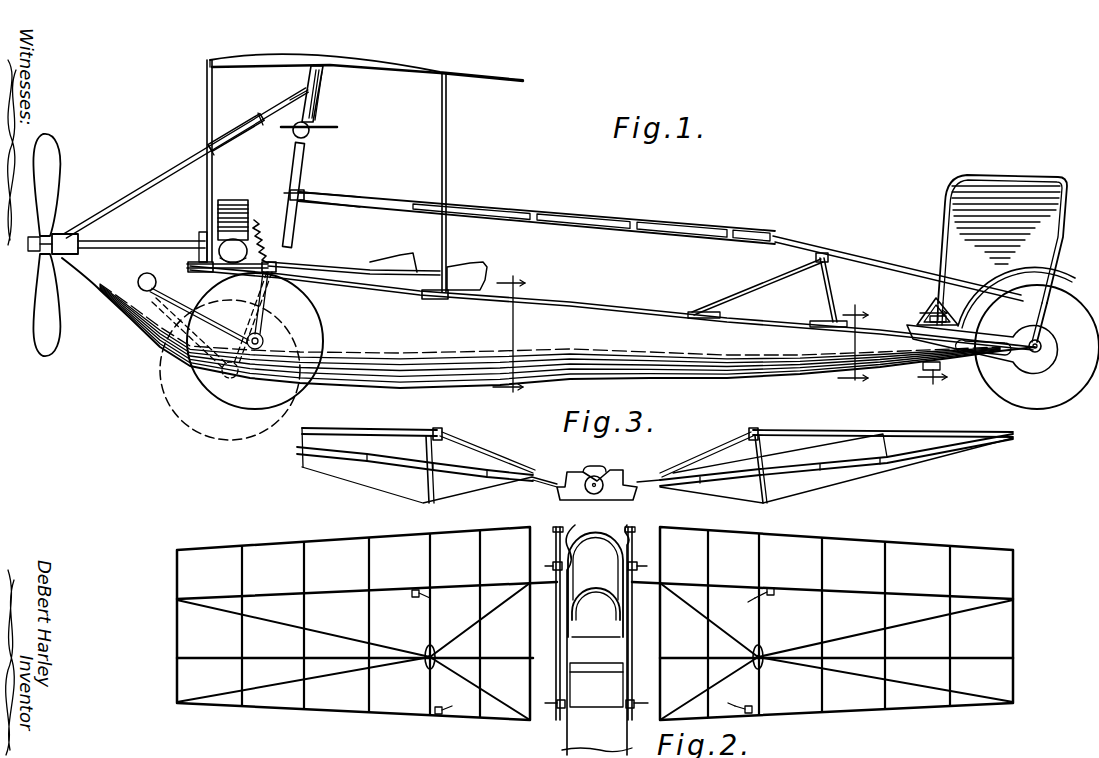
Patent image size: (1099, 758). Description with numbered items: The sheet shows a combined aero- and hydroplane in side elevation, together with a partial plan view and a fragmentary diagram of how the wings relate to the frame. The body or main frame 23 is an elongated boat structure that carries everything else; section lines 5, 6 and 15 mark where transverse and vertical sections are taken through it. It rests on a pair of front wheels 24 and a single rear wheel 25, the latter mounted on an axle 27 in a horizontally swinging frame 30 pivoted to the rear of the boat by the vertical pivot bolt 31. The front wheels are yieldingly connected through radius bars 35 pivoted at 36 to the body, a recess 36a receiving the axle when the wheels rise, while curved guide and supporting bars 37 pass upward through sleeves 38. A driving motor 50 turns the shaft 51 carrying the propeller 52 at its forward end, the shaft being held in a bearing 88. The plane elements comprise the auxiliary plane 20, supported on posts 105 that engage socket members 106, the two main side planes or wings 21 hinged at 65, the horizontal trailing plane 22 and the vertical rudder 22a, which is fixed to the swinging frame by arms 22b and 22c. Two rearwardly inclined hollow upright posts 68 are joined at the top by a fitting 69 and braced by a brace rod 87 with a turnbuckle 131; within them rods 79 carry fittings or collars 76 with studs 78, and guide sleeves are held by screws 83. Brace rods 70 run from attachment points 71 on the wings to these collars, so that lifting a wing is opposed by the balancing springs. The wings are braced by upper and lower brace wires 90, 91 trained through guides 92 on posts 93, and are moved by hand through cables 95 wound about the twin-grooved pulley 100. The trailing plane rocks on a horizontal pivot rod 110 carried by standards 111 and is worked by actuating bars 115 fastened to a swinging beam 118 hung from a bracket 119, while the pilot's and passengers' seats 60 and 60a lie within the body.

In FIG. 1, the section line 5— 5 is at (509, 333).
In FIG. 1, the section line 6— 6 is at (853, 344).
In FIG. 1, the section line 15— 15 is at (922, 342).
In FIG. 1, the auxiliary plane 20 is at (363, 57).
In FIG. 2, the main side planes or wings 21 is at (595, 623).
In FIG. 1, the trailing plane 22 is at (860, 256).
In FIG. 1, the vertical plane or rudder 22a is at (1002, 239).
In FIG. 1, the arms 22b is at (907, 317).
In FIG. 1, the arms 22c is at (1050, 302).
In FIG. 1, the body or main frame 23 is at (611, 301).
In FIG. 3, the body or main frame 23 is at (625, 472).
In FIG. 2, the body or main frame 23 is at (635, 528).
In FIG. 1, the front wheels 24 is at (325, 333).
In FIG. 1, the rear wheel 25 is at (1060, 395).
In FIG. 1, the axle 27 is at (1042, 345).
In FIG. 1, the horizontally swinging frame 30 is at (963, 367).
In FIG. 1, the vertical pivot bolt 31 is at (967, 317).
In FIG. 1, the radius bars 35 is at (177, 300).
In FIG. 1, the pivot 36 is at (137, 285).
In FIG. 1, the recess 36a is at (275, 307).
In FIG. 1, the curved guide and supporting bars 37 is at (256, 218).
In FIG. 1, the sleeves 38 is at (270, 264).
In FIG. 1, the driving motor 50 is at (236, 200).
In FIG. 1, the shaft 51 is at (158, 240).
In FIG. 1, the propeller 52 is at (60, 163).
In FIG. 2, the pilot's seat 60 is at (596, 612).
In FIG. 2, the passengers' seat 60a is at (595, 585).
In FIG. 1, the hinges 65 is at (193, 247).
In FIG. 2, the hinges 65 is at (562, 574).
In FIG. 1, the upright posts 68 is at (287, 173).
In FIG. 1, the fitting 69 is at (308, 77).
In FIG. 2, the brace rods 70 is at (739, 653).
In FIG. 2, the attachment points 71 is at (773, 588).
In FIG. 1, the fittings or collars 76 is at (296, 135).
In FIG. 1, the studs 78 is at (300, 93).
In FIG. 1, the rods 79 is at (320, 108).
In FIG. 1, the screws 83 is at (311, 128).
In FIG. 1, the brace rods 87 is at (179, 165).
In FIG. 1, the bearing 88 is at (68, 233).
In FIG. 2, the upper brace wires or cables 90 is at (352, 641).
In FIG. 3, the lower brace wires or cables 91 is at (398, 428).
In FIG. 3, the guides 92 is at (442, 430).
In FIG. 2, the guides 92 is at (432, 645).
In FIG. 3, the posts 93 is at (426, 455).
In FIG. 3, the cables 95 is at (596, 476).
In FIG. 3, the twin-grooved pulley 100 is at (584, 468).
In FIG. 1, the posts 105 is at (206, 93).
In FIG. 2, the posts 105 is at (555, 527).
In FIG. 1, the socket members 106 is at (443, 317).
In FIG. 2, the socket members 106 is at (586, 528).
In FIG. 1, the horizontal pivot rod 110 is at (822, 262).
In FIG. 1, the standards 111 is at (737, 292).
In FIG. 1, the actuating bars 115 is at (568, 213).
In FIG. 1, the swinging beam 118 is at (362, 190).
In FIG. 1, the bracket 119 is at (310, 167).
In FIG. 1, the turnbuckle 131 is at (236, 127).